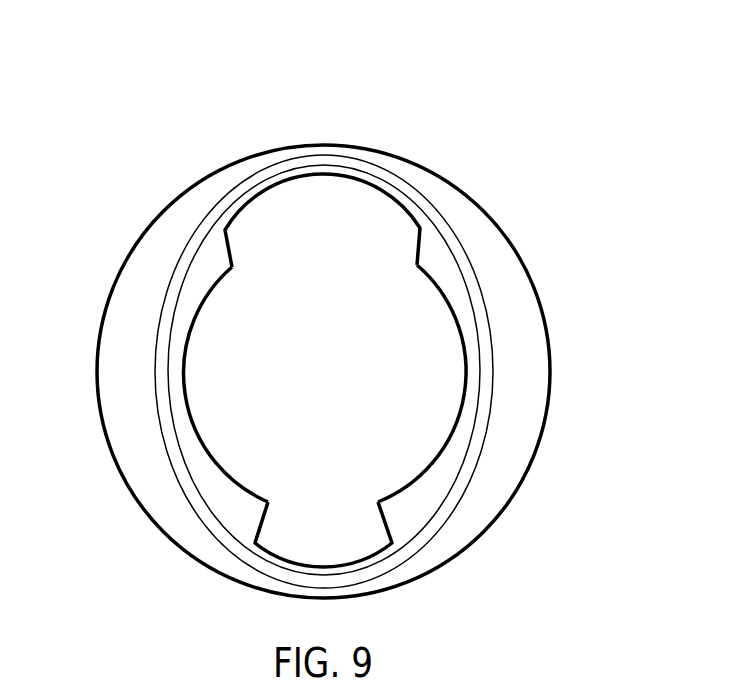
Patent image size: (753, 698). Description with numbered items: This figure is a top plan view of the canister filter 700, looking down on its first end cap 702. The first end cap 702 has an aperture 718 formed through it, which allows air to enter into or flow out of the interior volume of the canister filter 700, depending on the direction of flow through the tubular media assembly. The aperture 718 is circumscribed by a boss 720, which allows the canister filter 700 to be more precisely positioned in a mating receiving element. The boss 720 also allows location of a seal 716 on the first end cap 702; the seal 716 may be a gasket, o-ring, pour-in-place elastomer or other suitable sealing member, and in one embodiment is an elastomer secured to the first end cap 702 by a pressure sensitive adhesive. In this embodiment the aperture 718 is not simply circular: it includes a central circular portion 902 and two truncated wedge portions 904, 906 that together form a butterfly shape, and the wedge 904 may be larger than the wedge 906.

The canister filter 700 is at (343, 338).
The first end cap 702 is at (523, 373).
The seal 716 is at (483, 317).
The aperture 718 is at (325, 360).
The boss 720 is at (203, 470).
The central circular portion 902 is at (336, 356).
The truncated wedge portion 904 is at (323, 175).
The truncated wedge portion 906 is at (262, 548).